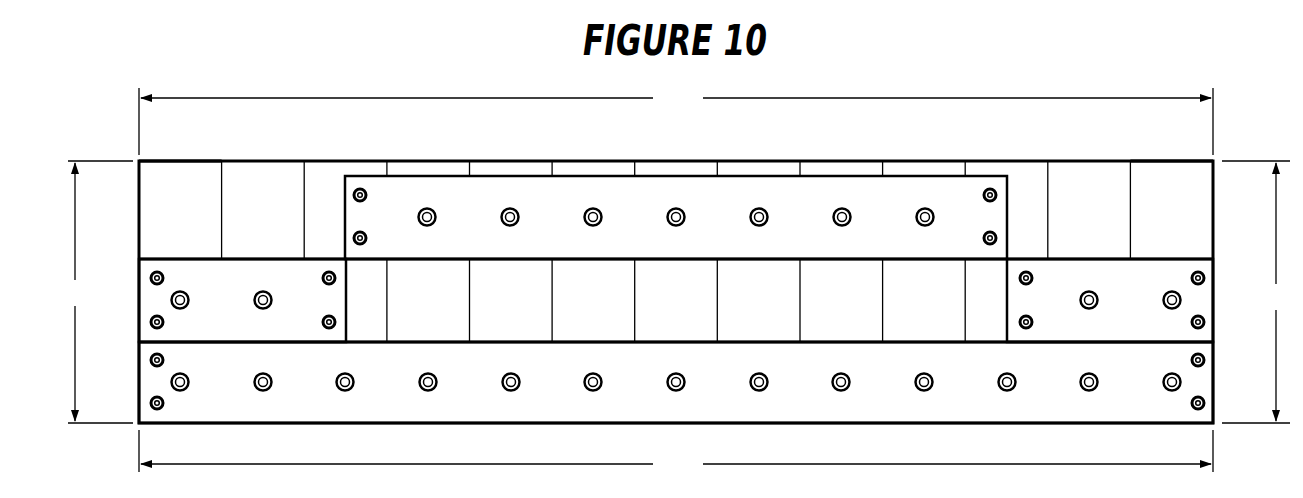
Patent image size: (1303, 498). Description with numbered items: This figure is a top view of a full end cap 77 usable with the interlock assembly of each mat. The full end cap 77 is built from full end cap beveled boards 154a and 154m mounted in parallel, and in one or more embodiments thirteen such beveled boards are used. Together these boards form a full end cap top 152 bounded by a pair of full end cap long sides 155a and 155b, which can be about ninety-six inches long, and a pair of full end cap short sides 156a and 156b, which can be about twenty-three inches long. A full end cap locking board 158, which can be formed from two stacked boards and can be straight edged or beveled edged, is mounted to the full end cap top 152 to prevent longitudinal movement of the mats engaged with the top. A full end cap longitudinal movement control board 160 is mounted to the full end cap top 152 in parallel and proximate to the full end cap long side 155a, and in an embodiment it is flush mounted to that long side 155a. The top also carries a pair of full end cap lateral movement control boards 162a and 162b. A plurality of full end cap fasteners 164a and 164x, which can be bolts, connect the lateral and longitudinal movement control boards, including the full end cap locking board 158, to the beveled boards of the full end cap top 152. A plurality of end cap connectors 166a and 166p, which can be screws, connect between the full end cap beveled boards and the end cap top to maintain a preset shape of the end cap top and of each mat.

The full end cap 77 is at (1240, 136).
The full end cap top 152 is at (1031, 156).
The full end cap beveled board 154a is at (184, 160).
The full end cap beveled board 154m is at (1170, 160).
The full end cap long side 155a is at (676, 120).
The full end cap long side 155b is at (676, 453).
The full end cap short side 156a is at (94, 292).
The full end cap short side 156b is at (1259, 292).
The full end cap locking board 158 is at (883, 384).
The full end cap longitudinal movement control board 160 is at (718, 196).
The full end cap lateral movement control board 162a is at (155, 329).
The full end cap lateral movement control board 162b is at (1200, 334).
The full end cap fastener 164a is at (180, 388).
The full end cap fastener 164x is at (1172, 292).
The end cap connector 166a is at (152, 405).
The end cap connector 166p is at (1203, 405).